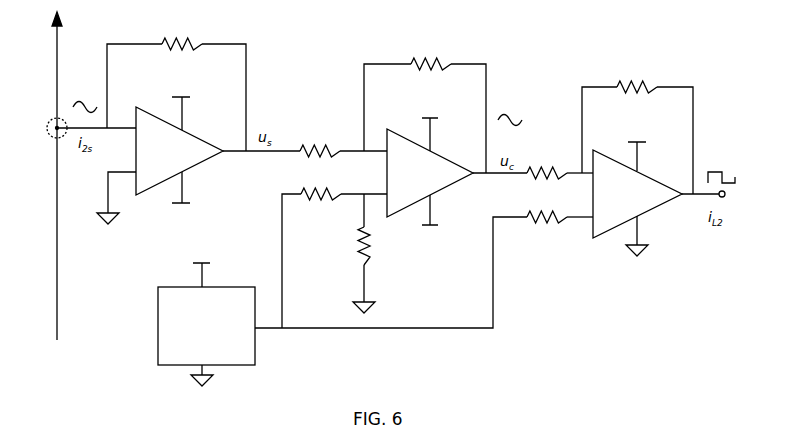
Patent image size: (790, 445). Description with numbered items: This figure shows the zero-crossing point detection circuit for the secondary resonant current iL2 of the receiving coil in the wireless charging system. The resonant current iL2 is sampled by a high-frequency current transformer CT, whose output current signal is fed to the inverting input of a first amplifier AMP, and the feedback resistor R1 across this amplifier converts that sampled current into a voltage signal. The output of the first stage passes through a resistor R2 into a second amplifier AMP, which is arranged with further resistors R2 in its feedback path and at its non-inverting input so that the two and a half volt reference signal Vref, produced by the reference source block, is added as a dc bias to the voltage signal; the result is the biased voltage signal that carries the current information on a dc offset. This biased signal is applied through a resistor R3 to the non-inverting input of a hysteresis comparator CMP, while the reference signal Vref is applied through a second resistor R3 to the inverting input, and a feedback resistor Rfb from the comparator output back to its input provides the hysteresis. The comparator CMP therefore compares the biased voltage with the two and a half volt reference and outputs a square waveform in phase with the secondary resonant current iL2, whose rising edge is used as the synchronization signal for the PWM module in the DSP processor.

The secondary resonant current iL2 is at (65, 176).
The current transformer CT is at (42, 128).
The resistor R1 is at (176, 86).
The amplifier AMP is at (285, 164).
The resistor R2 is at (384, 182).
The 2.5V reference signal Vref is at (342, 301).
The resistor R3 is at (560, 183).
The hysteresis comparator CMP is at (637, 188).
The feedback resistor Rfb is at (637, 127).